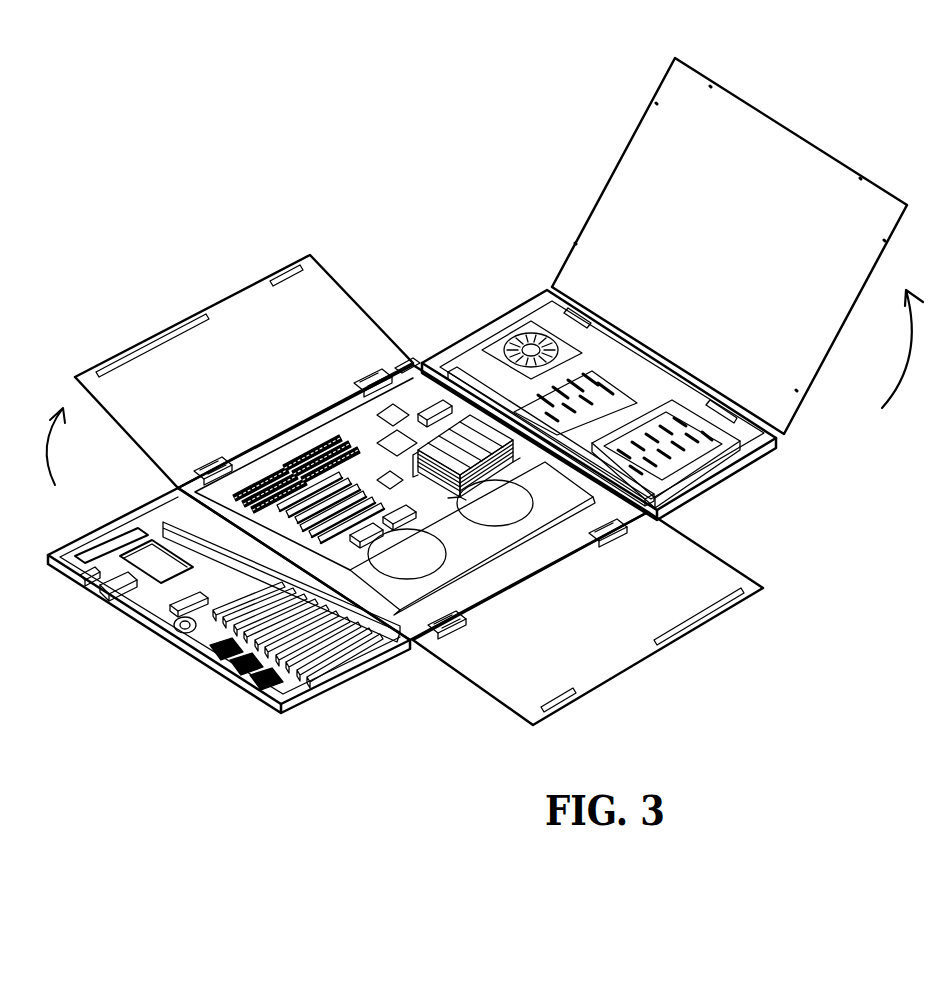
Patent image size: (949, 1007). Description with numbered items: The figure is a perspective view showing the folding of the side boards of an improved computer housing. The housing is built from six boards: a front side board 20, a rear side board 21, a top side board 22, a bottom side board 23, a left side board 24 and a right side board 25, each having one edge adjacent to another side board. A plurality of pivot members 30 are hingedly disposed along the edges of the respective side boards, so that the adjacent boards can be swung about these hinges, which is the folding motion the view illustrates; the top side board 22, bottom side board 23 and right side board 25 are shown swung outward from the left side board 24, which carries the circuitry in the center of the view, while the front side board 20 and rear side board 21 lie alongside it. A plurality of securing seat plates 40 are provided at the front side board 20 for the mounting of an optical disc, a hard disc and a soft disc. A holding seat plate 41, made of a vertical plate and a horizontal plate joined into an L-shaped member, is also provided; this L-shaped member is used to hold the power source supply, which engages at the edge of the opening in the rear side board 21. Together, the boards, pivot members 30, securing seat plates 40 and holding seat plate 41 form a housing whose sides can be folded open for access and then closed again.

The front side board 20 is at (482, 325).
The rear side board 21 is at (197, 668).
The top side board 22 is at (210, 320).
The bottom side board 23 is at (653, 613).
The left side board 24 is at (410, 373).
The right side board 25 is at (840, 158).
The pivot member 30 is at (220, 453).
The securing seat plate 40 is at (725, 447).
The holding seat plate 41 is at (95, 567).